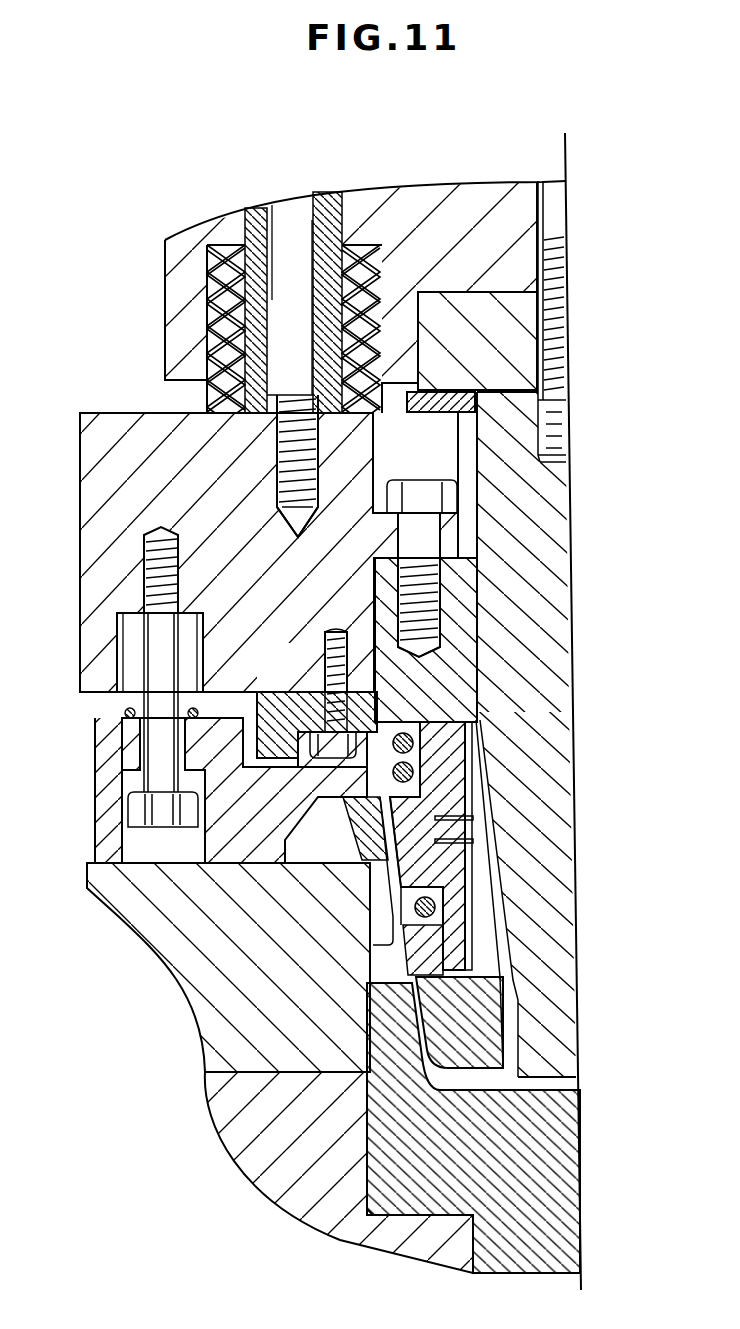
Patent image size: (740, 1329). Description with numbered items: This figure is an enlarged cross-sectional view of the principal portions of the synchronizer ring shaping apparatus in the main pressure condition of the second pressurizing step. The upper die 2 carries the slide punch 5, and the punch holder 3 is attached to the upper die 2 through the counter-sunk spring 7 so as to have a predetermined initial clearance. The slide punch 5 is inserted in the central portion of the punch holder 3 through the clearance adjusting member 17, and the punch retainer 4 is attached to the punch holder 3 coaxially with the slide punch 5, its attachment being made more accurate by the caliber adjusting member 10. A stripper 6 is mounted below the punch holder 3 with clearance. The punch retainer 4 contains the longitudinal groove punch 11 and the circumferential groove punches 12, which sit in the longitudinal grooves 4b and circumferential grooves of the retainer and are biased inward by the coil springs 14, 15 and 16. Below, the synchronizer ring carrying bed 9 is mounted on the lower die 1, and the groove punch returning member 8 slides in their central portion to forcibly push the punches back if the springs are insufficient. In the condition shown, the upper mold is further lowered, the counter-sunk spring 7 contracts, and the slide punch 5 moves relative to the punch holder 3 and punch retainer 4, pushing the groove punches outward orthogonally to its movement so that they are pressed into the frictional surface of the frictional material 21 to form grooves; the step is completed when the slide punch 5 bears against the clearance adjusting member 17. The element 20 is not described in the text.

The lower die 1 is at (230, 1140).
The upper die 2 is at (166, 268).
The punch holder 3 is at (93, 513).
The punch retainer 4 is at (466, 633).
The longitudinal grooves 4b is at (468, 905).
The slide punch 5 is at (555, 532).
The stripper 6 is at (95, 768).
The counter-sunk spring 7 is at (245, 398).
The groove punch returning member 8 is at (570, 1170).
The synchronizer ring carrying bed 9 is at (120, 910).
The caliber adjusting member 10 is at (286, 692).
The longitudinal groove punch 11 is at (440, 765).
The circumferential groove punches 12 is at (473, 818).
The coil spring 14 is at (415, 735).
The coil spring 15 is at (418, 780).
The coil spring 16 is at (438, 922).
The clearance adjusting member 17 is at (510, 388).
The wedge 20 is at (362, 840).
The frictional material 21 is at (388, 853).